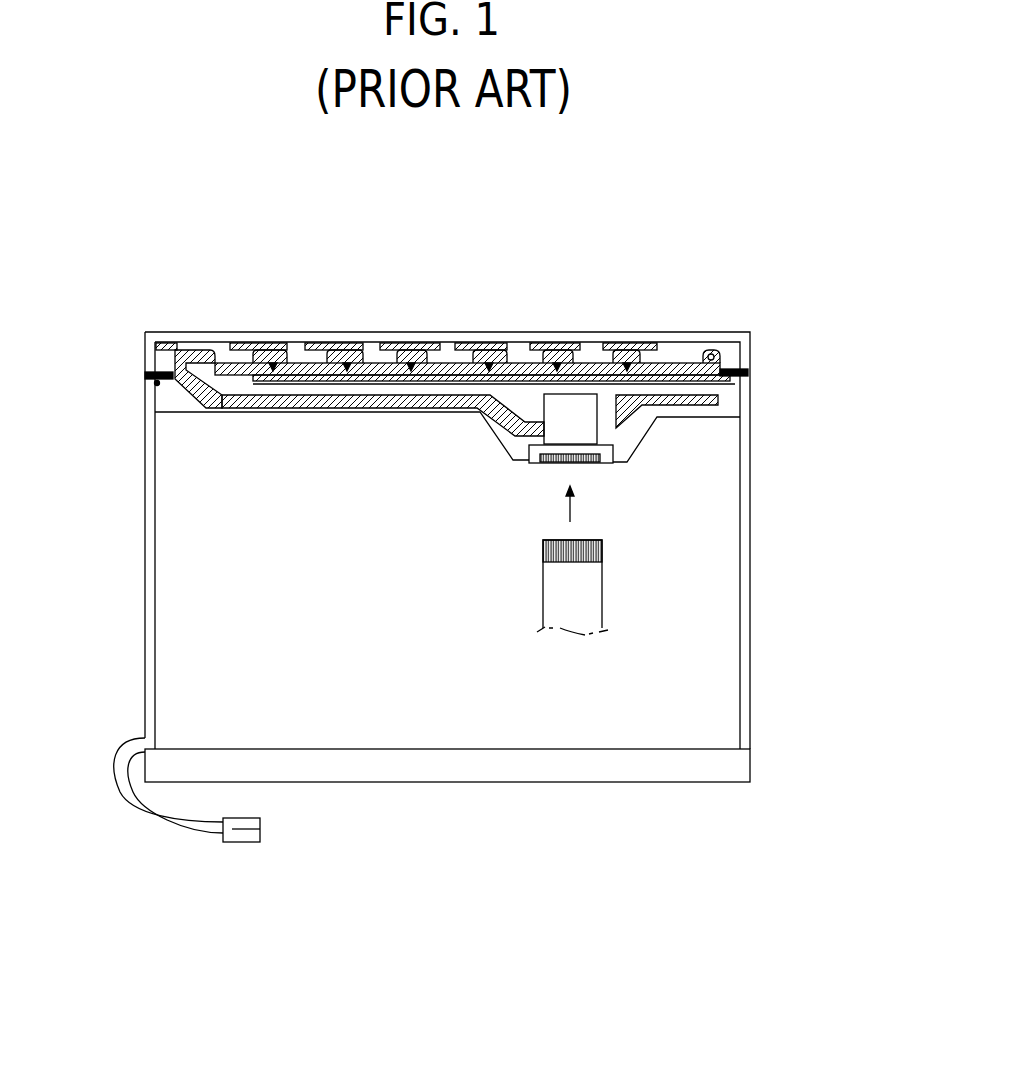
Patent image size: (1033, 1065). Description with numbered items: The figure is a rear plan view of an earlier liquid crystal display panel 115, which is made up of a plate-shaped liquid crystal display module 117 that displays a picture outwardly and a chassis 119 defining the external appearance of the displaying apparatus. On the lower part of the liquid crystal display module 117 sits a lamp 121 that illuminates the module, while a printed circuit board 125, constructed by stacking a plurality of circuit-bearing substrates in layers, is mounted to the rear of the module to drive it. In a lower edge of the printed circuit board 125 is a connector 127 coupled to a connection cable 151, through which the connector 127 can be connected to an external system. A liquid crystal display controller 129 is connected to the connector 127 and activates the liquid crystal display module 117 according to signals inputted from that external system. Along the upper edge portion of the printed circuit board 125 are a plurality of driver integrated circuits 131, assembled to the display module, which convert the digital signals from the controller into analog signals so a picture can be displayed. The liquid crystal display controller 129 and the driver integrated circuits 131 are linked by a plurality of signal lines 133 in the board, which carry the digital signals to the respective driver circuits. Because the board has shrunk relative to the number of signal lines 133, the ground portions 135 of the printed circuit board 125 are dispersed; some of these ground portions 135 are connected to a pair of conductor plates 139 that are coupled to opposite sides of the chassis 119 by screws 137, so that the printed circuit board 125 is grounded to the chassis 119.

The liquid crystal display panel 115 is at (225, 309).
The liquid crystal display module 117 is at (190, 525).
The chassis 119 is at (150, 468).
The lamp 121 is at (358, 782).
The printed circuit board 125 is at (735, 399).
The connector 127 is at (590, 464).
The liquid crystal display controller 129 is at (567, 410).
The driver integrated circuits 131 is at (320, 343).
The signal lines 133 is at (398, 402).
The ground portions 135 is at (175, 356).
The screws 137 is at (145, 375).
The conductor plates 139 is at (730, 345).
The connection cable 151 is at (602, 597).